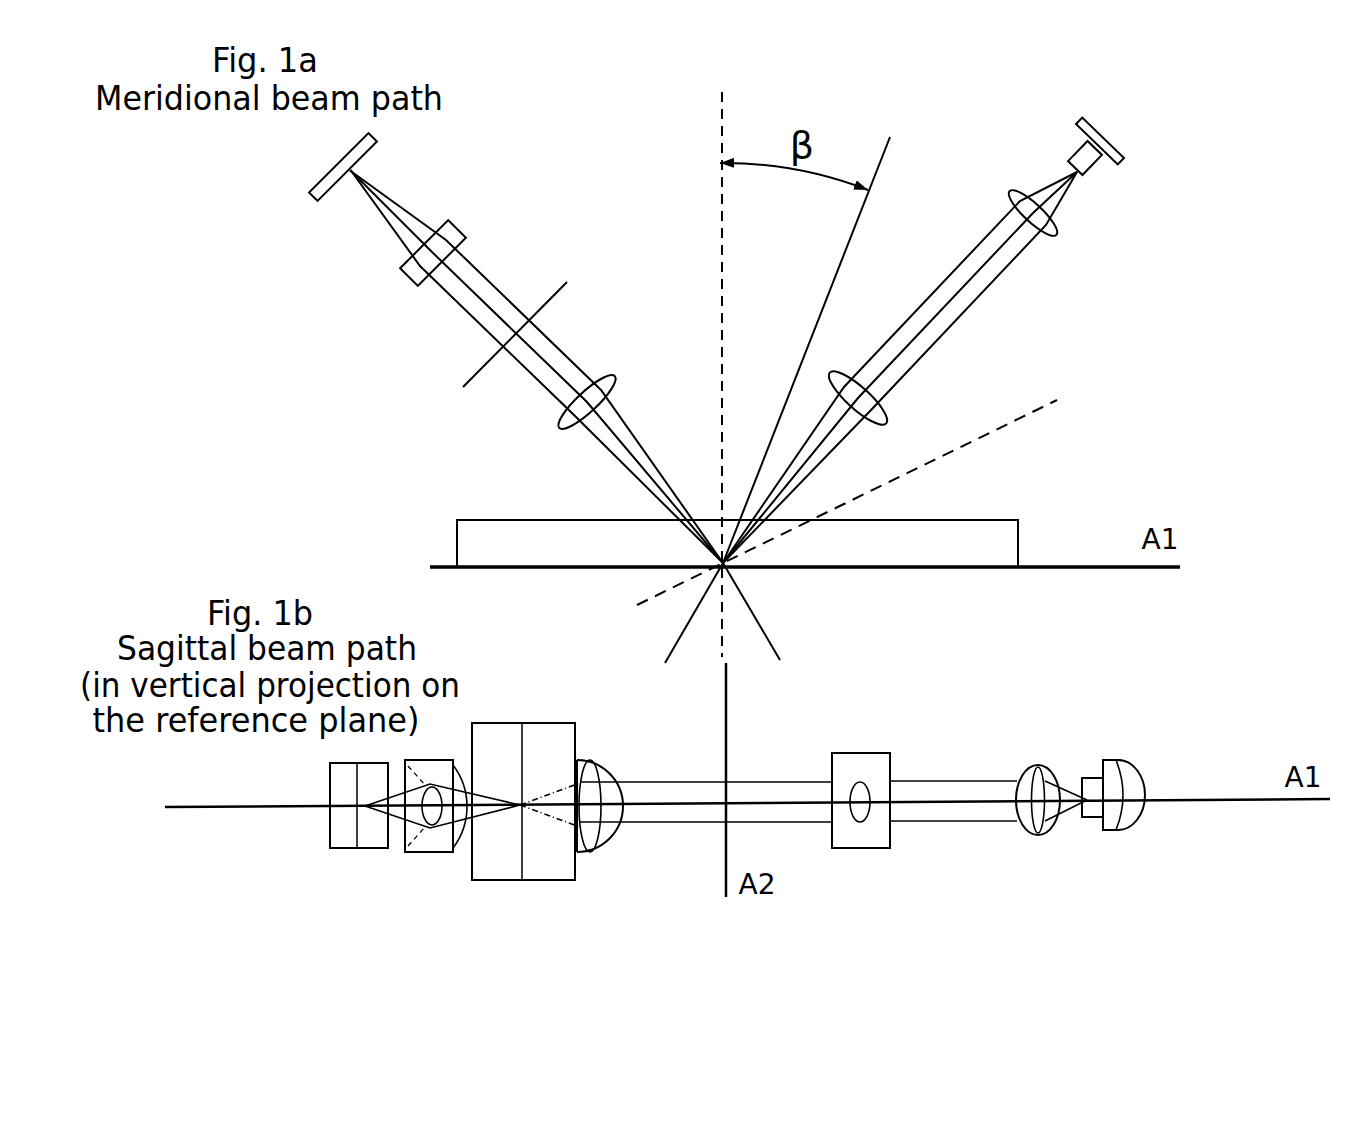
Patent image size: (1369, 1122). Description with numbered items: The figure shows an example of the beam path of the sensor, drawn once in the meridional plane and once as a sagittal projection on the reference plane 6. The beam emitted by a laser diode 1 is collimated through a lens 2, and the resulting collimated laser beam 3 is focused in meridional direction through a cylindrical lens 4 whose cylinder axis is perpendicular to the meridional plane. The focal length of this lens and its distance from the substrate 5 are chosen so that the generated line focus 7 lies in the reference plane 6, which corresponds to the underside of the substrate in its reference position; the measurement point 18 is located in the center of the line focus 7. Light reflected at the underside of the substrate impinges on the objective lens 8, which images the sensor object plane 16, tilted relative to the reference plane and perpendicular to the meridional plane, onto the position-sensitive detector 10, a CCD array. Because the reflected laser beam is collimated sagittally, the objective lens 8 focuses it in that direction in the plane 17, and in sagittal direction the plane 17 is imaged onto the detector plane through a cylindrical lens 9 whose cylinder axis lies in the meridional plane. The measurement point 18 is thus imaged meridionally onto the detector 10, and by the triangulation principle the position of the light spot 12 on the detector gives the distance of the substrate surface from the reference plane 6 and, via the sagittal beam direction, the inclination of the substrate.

In FIG. 1A, the laser diode 1 is at (1118, 148).
In FIG. 1B, the laser diode 1 is at (1126, 814).
In FIG. 1A, the lens 2 is at (1045, 228).
In FIG. 1B, the lens 2 is at (1051, 820).
In FIG. 1A, the collimated laser beam 3 is at (900, 367).
In FIG. 1B, the collimated laser beam 3 is at (953, 784).
In FIG. 1A, the cylindrical lens 4 is at (866, 408).
In FIG. 1B, the cylindrical lens 4 is at (867, 817).
In FIG. 1A, the substrate 5 is at (755, 543).
In FIG. 1A, the reference plane 6 is at (940, 572).
In FIG. 1B, the line focus 7 is at (722, 792).
In FIG. 1A, the objective lens 8 is at (602, 386).
In FIG. 1B, the objective lens 8 is at (547, 809).
In FIG. 1A, the cylindrical lens 9 is at (450, 246).
In FIG. 1B, the cylindrical lens 9 is at (436, 824).
In FIG. 1A, the position-sensitive detector 10 is at (325, 182).
In FIG. 1B, the position-sensitive detector 10 is at (338, 830).
In FIG. 1A, the light spot 12 is at (345, 167).
In FIG. 1A, the sensor object plane 16 is at (1032, 420).
In FIG. 1A, the plane 17 is at (519, 713).
In FIG. 1B, the measurement point 18 is at (732, 797).